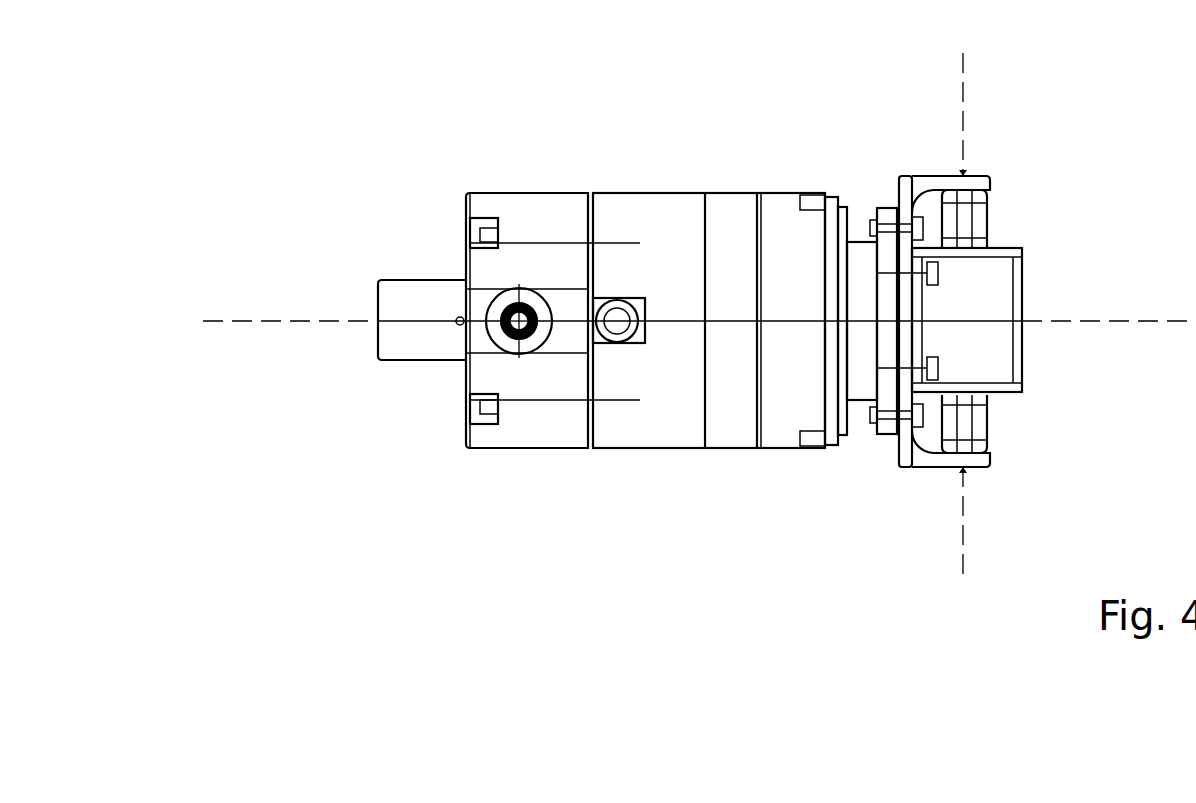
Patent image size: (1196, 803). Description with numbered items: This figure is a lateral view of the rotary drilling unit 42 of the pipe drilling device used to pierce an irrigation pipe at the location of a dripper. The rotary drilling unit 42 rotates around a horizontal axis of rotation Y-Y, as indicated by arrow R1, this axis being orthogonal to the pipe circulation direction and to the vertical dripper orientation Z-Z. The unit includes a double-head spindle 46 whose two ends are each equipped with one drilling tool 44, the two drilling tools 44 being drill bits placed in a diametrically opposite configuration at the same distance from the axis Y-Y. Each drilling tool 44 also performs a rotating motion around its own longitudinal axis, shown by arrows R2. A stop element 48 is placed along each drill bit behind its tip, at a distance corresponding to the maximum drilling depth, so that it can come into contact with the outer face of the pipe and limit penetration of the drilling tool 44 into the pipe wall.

The rotary drilling unit 42 is at (412, 98).
The drilling tool 44 is at (968, 174).
The double-head spindle 46 is at (1003, 330).
The stop element 48 is at (920, 178).
The rotation of the rotary drilling unit R1 is at (672, 178).
The rotation of the drilling tool R2 is at (993, 226).
The axis of rotation Y-Y is at (242, 321).
The vertical dripper orientation Z-Z is at (972, 293).